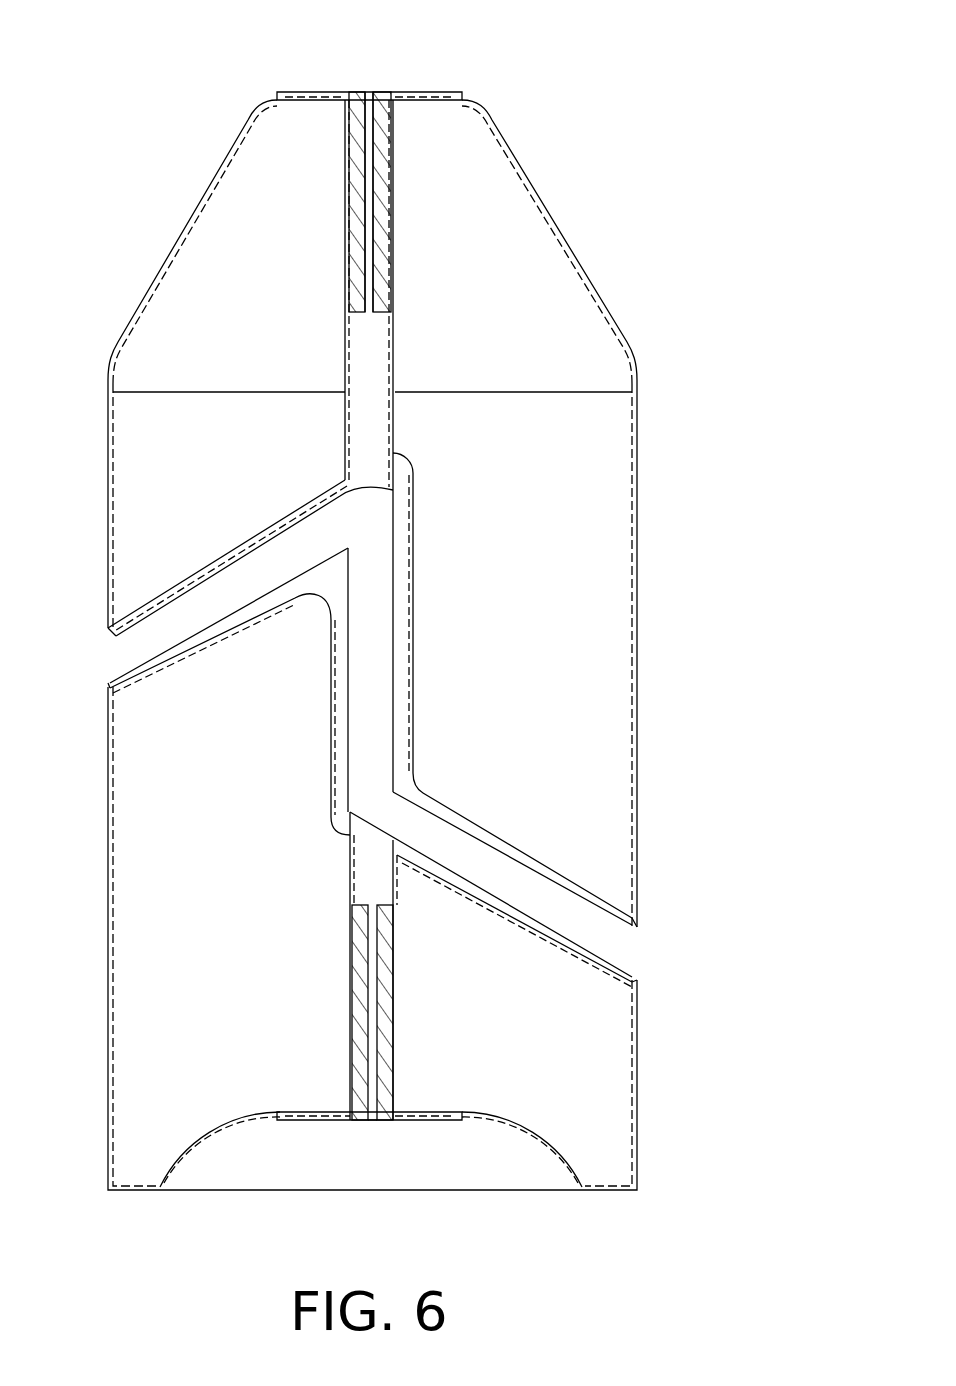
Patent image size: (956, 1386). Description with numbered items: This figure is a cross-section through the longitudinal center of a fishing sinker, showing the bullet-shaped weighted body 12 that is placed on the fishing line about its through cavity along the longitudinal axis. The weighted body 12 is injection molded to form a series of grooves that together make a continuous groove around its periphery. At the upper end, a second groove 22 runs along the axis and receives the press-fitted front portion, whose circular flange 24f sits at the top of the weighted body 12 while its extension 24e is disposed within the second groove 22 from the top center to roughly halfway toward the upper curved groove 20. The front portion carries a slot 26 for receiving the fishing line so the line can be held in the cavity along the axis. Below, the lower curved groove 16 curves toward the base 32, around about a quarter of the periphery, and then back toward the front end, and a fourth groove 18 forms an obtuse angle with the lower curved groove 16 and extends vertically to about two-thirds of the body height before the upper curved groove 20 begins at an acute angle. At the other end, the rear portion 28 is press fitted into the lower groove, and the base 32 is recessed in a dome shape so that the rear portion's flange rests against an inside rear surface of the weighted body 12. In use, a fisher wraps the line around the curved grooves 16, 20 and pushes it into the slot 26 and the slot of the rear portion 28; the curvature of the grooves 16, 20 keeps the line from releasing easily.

The weighted body 12 is at (142, 912).
The lower curved groove 16 is at (615, 943).
The fourth groove 18 is at (390, 684).
The upper curved groove 20 is at (130, 650).
The second groove 22 is at (380, 374).
The extension 24e is at (358, 202).
The circular flange 24f is at (318, 92).
The slot 26 is at (371, 95).
The rear portion 28 is at (380, 1145).
The base 32 is at (225, 1168).